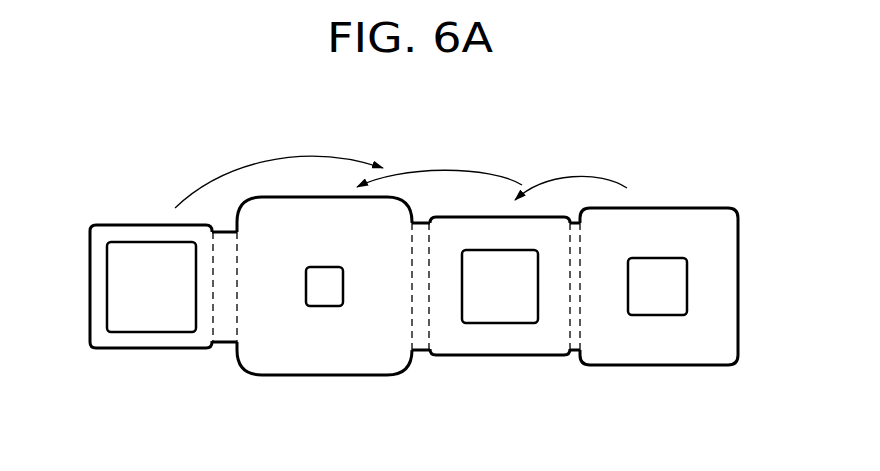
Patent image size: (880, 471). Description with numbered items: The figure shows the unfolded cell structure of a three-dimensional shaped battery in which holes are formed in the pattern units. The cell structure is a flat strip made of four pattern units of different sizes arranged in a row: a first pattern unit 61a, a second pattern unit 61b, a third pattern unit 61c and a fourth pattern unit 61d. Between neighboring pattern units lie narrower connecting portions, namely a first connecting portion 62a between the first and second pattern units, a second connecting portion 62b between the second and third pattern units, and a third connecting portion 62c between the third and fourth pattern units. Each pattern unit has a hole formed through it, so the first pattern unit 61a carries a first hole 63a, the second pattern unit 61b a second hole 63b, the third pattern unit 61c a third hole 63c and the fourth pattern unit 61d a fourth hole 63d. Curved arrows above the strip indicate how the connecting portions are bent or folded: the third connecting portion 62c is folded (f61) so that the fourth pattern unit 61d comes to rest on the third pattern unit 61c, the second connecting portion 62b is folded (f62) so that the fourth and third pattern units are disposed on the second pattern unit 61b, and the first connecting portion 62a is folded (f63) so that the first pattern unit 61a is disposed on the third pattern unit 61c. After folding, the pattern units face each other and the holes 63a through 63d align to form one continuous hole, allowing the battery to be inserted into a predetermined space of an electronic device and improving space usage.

The first pattern unit 61a is at (156, 348).
The second pattern unit 61b is at (327, 378).
The third pattern unit 61c is at (502, 358).
The fourth pattern unit 61d is at (665, 367).
The first connecting portion 62a is at (222, 343).
The second connecting portion 62b is at (415, 353).
The third connecting portion 62c is at (573, 353).
The first hole 63a is at (130, 322).
The second hole 63b is at (318, 296).
The third hole 63c is at (475, 312).
The fourth hole 63d is at (640, 312).
The folding of the first connecting portion f63 is at (279, 169).
The folding of the second connecting portion f62 is at (439, 165).
The folding of the third connecting portion f61 is at (571, 174).